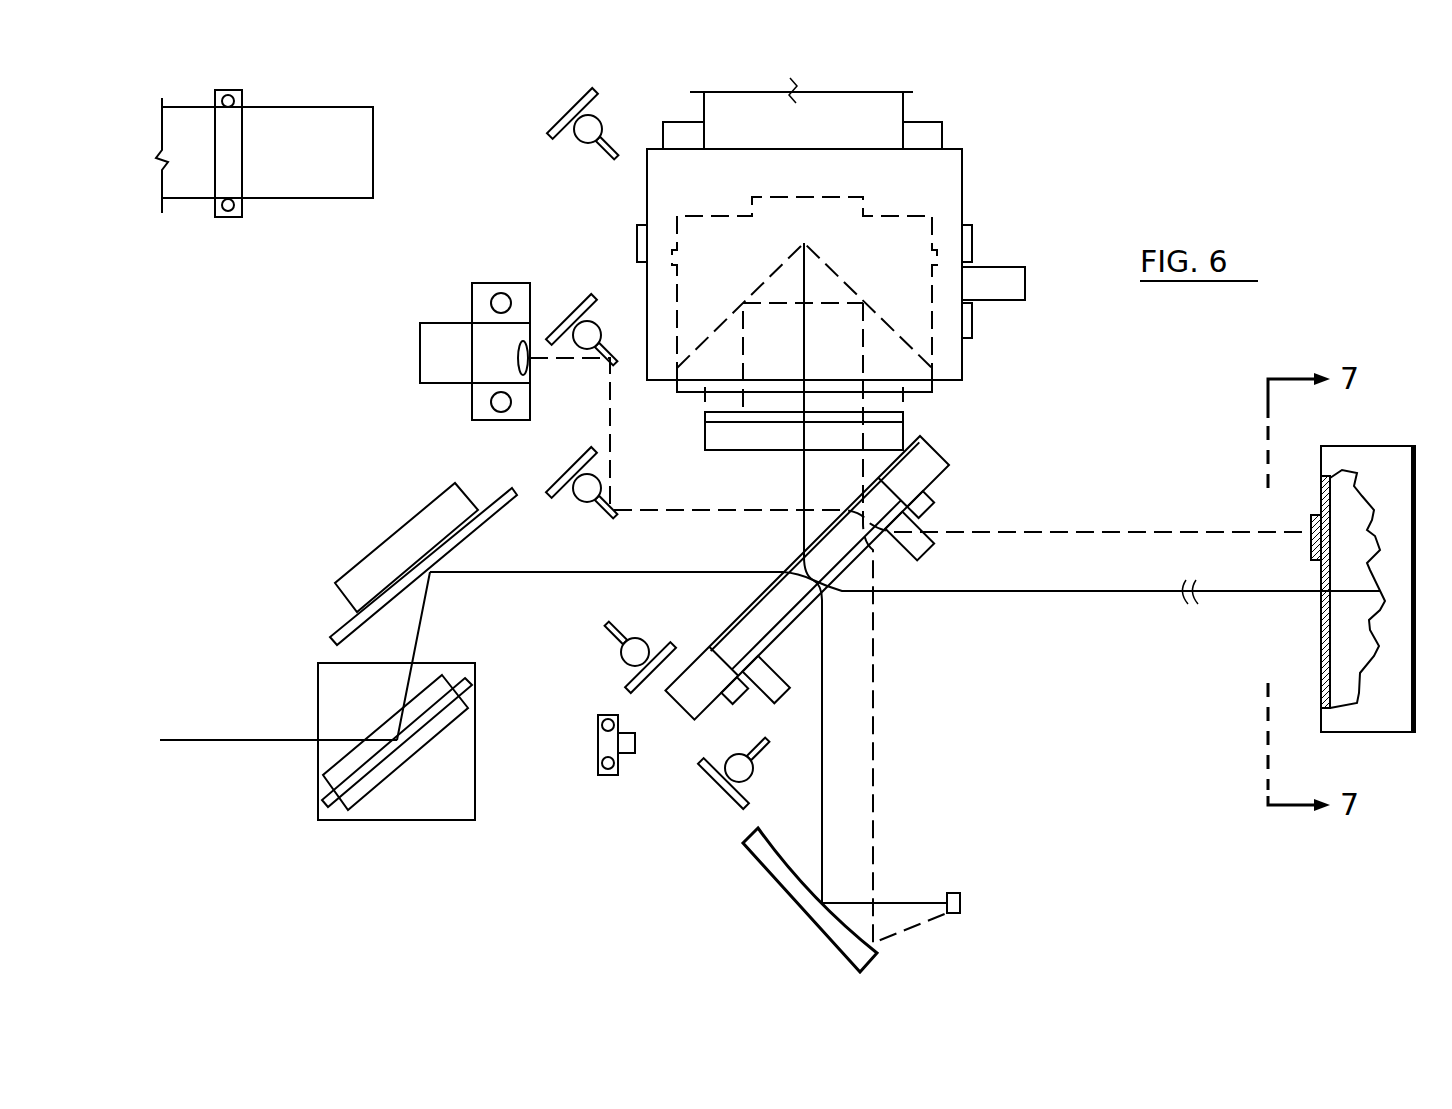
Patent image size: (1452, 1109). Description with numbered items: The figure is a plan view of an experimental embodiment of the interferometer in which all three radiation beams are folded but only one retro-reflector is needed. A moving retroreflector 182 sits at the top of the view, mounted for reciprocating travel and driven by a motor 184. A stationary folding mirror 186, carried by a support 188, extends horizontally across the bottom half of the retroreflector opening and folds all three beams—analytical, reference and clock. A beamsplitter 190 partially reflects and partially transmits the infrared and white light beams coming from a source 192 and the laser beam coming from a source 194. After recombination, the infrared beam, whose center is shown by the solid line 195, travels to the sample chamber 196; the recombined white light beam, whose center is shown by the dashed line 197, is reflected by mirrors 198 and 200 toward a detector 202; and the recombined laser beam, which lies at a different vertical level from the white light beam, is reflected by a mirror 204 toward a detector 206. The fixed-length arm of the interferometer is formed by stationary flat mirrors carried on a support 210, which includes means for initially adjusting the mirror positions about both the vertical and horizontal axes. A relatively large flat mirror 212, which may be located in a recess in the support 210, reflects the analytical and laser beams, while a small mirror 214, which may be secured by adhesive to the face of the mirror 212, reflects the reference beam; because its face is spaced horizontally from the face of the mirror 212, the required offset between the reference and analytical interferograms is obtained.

The moving retroreflector 182 is at (847, 283).
The motor 184 is at (868, 110).
The stationary folding mirror 186 is at (905, 408).
The support 188 is at (905, 430).
The beamsplitter 190 is at (838, 554).
The source 192 is at (962, 900).
The source 194 is at (330, 198).
The solid line 195 is at (500, 572).
The sample chamber 196 is at (195, 687).
The dashed line 197 is at (608, 437).
The mirror 198 is at (612, 510).
The mirror 200 is at (614, 366).
The detector 202 is at (532, 362).
The mirror 204 is at (753, 752).
The detector 206 is at (628, 756).
The support 210 is at (1346, 438).
The flat mirror 212 is at (1313, 618).
The small mirror 214 is at (1303, 548).